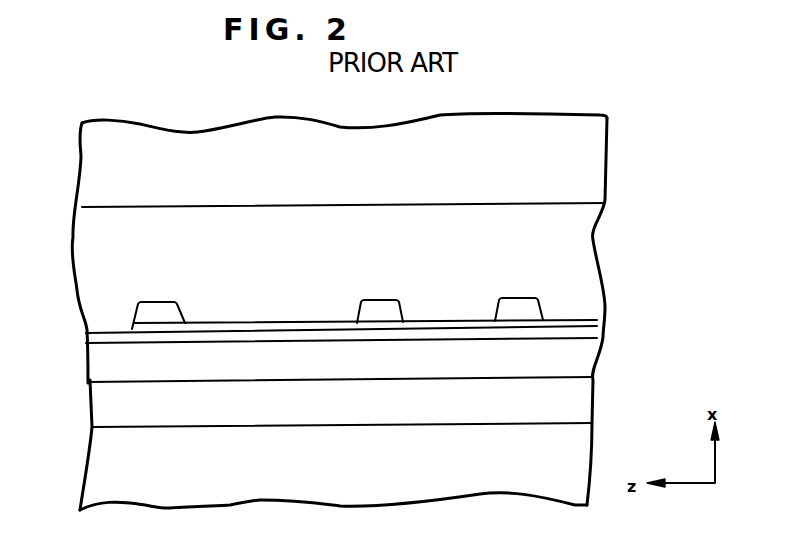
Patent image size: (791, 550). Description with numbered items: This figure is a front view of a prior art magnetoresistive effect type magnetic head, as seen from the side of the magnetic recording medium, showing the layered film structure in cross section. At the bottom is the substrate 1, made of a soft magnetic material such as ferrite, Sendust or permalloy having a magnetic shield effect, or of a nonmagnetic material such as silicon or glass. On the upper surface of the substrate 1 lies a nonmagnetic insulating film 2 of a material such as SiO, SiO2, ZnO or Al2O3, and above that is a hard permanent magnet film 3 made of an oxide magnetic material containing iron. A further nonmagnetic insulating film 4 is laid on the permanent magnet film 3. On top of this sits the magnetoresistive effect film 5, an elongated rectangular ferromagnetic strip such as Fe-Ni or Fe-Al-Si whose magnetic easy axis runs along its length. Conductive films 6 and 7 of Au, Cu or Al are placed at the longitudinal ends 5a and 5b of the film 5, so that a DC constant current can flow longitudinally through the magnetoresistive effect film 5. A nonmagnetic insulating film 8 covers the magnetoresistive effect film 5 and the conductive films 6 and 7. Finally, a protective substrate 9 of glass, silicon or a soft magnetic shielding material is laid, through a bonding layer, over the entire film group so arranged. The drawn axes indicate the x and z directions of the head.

The substrate 1 is at (510, 485).
The nonmagnetic insulating film 2 is at (323, 420).
The hard permanent magnet film 3 is at (238, 380).
The nonmagnetic insulating film 4 is at (172, 337).
The magnetoresistive effect film 5 is at (240, 323).
The longitudinal end of the film 5a is at (135, 331).
The longitudinal end of the film 5b is at (385, 325).
The conductive film 6 is at (157, 308).
The conductive film 7 is at (382, 305).
The nonmagnetic insulating film 8 is at (270, 217).
The protective substrate 9 is at (433, 132).